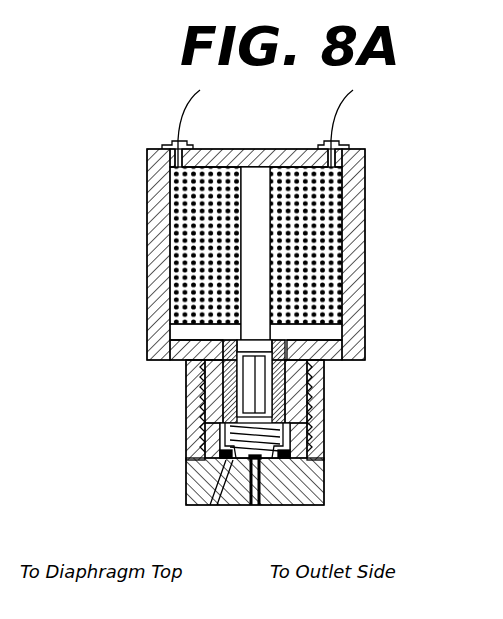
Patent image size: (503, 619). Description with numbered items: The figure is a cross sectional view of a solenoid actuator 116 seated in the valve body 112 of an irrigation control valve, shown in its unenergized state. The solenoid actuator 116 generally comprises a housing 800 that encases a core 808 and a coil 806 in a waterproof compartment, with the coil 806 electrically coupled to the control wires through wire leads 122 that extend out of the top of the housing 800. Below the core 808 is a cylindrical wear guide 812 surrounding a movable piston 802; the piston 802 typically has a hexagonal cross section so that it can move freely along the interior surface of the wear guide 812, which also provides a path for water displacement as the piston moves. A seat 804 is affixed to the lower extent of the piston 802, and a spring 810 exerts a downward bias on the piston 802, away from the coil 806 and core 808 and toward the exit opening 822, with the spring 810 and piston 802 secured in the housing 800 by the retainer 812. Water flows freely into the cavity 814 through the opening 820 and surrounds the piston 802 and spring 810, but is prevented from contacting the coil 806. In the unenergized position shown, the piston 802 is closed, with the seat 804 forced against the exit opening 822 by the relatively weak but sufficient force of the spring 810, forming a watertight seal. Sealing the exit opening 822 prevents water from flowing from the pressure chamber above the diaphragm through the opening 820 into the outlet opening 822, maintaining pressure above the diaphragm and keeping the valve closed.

The solenoid actuator 116 is at (121, 128).
The wire leads 122 is at (325, 115).
The housing 800 is at (365, 250).
The coil 806 is at (342, 190).
The core 808 is at (262, 222).
The cavity 814 is at (272, 346).
The wear guide 812 is at (203, 381).
The piston 802 is at (307, 382).
The seat 804 is at (222, 446).
The spring 810 is at (324, 425).
The valve body 112 is at (324, 466).
The opening 820 is at (208, 505).
The exit opening 822 is at (257, 505).